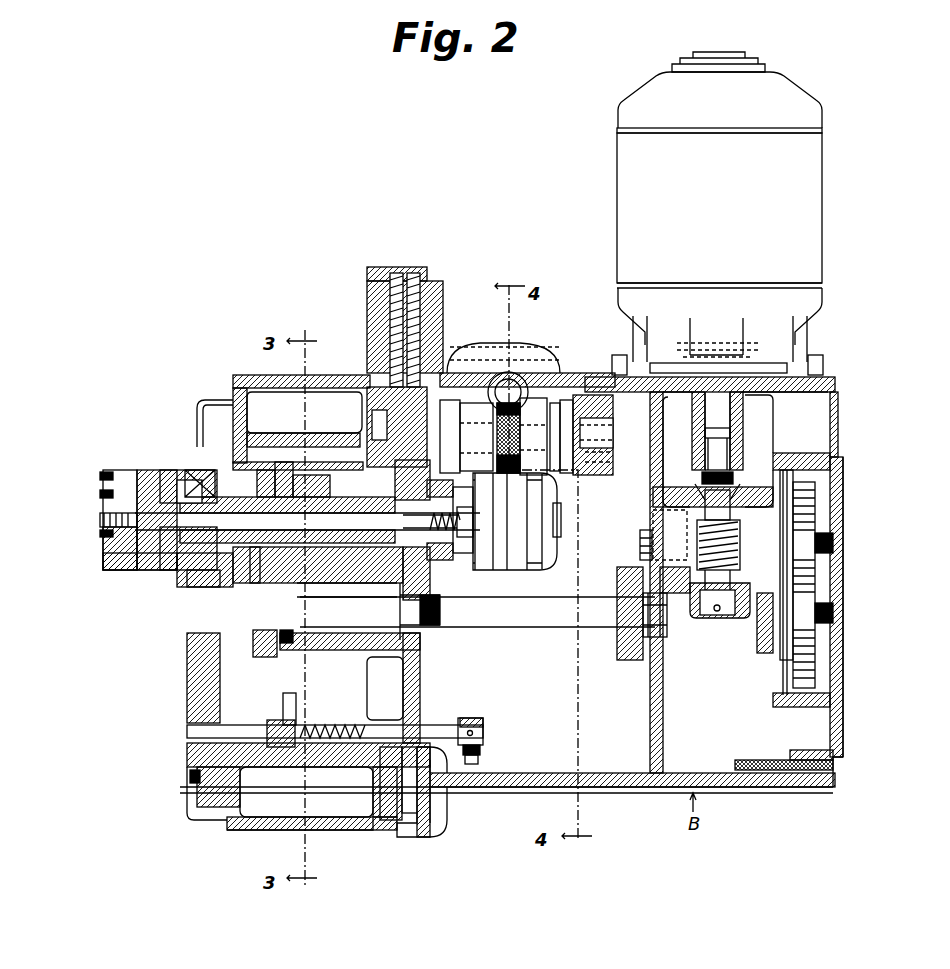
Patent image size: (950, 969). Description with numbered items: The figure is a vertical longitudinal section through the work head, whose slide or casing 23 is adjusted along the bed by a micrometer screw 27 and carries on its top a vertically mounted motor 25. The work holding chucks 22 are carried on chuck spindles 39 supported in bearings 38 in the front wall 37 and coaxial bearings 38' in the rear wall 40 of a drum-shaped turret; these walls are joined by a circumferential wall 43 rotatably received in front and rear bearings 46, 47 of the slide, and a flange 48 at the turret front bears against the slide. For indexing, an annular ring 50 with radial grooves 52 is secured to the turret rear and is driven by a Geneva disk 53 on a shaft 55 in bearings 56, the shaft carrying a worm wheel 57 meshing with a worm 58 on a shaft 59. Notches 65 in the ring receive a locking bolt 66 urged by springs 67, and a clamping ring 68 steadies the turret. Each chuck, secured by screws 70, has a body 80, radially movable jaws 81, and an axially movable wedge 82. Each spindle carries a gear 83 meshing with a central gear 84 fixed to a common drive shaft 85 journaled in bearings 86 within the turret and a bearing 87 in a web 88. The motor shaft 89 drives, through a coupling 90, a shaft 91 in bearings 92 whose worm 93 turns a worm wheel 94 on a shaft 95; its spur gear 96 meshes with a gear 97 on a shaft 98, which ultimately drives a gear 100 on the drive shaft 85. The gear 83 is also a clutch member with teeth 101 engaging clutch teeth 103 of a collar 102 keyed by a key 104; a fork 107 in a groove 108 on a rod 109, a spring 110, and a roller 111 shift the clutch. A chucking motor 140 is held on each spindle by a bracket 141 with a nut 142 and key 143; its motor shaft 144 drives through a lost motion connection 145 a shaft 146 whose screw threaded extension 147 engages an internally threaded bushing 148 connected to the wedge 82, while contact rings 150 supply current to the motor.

The work holding chucks 22 is at (111, 462).
The work head slide 23 is at (835, 378).
The motor 25 is at (717, 213).
The micrometer screw 27 is at (833, 778).
The front wall 37 is at (190, 693).
The bearings 38 is at (190, 581).
The spindle supporting bearings 38' is at (326, 581).
The chuck spindles 39 is at (300, 500).
The rear wall 40 is at (412, 687).
The circumferential wall 43 is at (318, 768).
The front bearing 46 is at (250, 770).
The rear bearing 47 is at (355, 770).
The circumferential flange 48 is at (190, 778).
The annular ring 50 is at (390, 808).
The radial grooves 52 is at (412, 800).
The disk 53 is at (445, 384).
The shaft 55 is at (608, 430).
The bearings 56 is at (602, 458).
The worm wheel 57 is at (497, 448).
The worm 58 is at (524, 398).
The shaft 59 is at (505, 385).
The notches 65 is at (386, 417).
The locking bolt 66 is at (366, 378).
The springs 67 is at (376, 302).
The clamping ring 68 is at (556, 400).
The screws 70 is at (135, 565).
The head or body 80 is at (108, 555).
The radially movable jaws 81 is at (137, 470).
The axially movable wedge 82 is at (100, 518).
The gear 83 is at (278, 462).
The centrally located gear 84 is at (262, 657).
The common drive shaft 85 is at (512, 615).
The bearings 86 is at (290, 645).
The bearing 87 is at (660, 638).
The web 88 is at (663, 703).
The motor shaft 89 is at (728, 405).
The coupling 90 is at (732, 432).
The shaft 91 is at (727, 447).
The bearings 92 is at (735, 486).
The worm 93 is at (665, 517).
The worm wheel 94 is at (770, 510).
The shaft 95 is at (688, 548).
The spur gear 96 is at (812, 532).
The gear 97 is at (801, 588).
The shaft 98 is at (756, 645).
The gear 100 is at (628, 660).
The teeth 101 is at (262, 448).
The collar 102 is at (207, 590).
The clutch teeth 103 is at (255, 555).
The key 104 is at (222, 400).
The fork 107 is at (283, 703).
The groove 108 is at (295, 475).
The rod 109 is at (447, 725).
The spring 110 is at (333, 728).
The roller 111 is at (482, 750).
The motor 140 is at (550, 492).
The bracket 141 is at (520, 570).
The nut 142 is at (445, 555).
The key 143 is at (450, 545).
The motor shaft 144 is at (562, 520).
The lost motion connection 145 is at (445, 558).
The shaft 146 is at (345, 527).
The screw threaded extension 147 is at (183, 475).
The internally threaded bushing 148 is at (167, 498).
The contact rings 150 is at (528, 555).